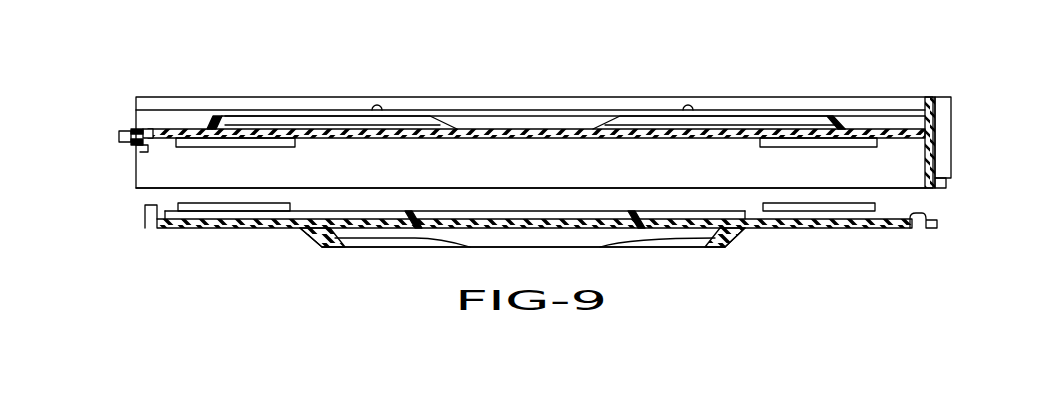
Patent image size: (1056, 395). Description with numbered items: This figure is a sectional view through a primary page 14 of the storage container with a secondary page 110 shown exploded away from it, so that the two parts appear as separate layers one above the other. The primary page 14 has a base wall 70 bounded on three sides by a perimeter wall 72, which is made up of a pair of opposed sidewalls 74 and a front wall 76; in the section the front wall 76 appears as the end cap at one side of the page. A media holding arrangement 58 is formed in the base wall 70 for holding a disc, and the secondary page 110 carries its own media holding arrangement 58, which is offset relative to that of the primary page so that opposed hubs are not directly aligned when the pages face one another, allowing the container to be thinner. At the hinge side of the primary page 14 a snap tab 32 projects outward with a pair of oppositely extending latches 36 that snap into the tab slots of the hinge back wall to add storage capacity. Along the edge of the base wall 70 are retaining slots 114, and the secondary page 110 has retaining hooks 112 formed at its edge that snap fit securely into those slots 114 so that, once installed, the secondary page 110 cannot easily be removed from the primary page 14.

The first primary page 14 is at (800, 97).
The snap tab 32 is at (119, 138).
The latches 36 is at (126, 130).
The media holding arrangement 58 is at (413, 115).
The base wall 70 is at (730, 129).
The perimeter wall 72 is at (222, 178).
The sidewalls 74 is at (390, 168).
The front wall 76 is at (935, 118).
The secondary page 110 is at (820, 229).
The retaining hooks 112 is at (260, 202).
The retaining slots 114 is at (148, 128).